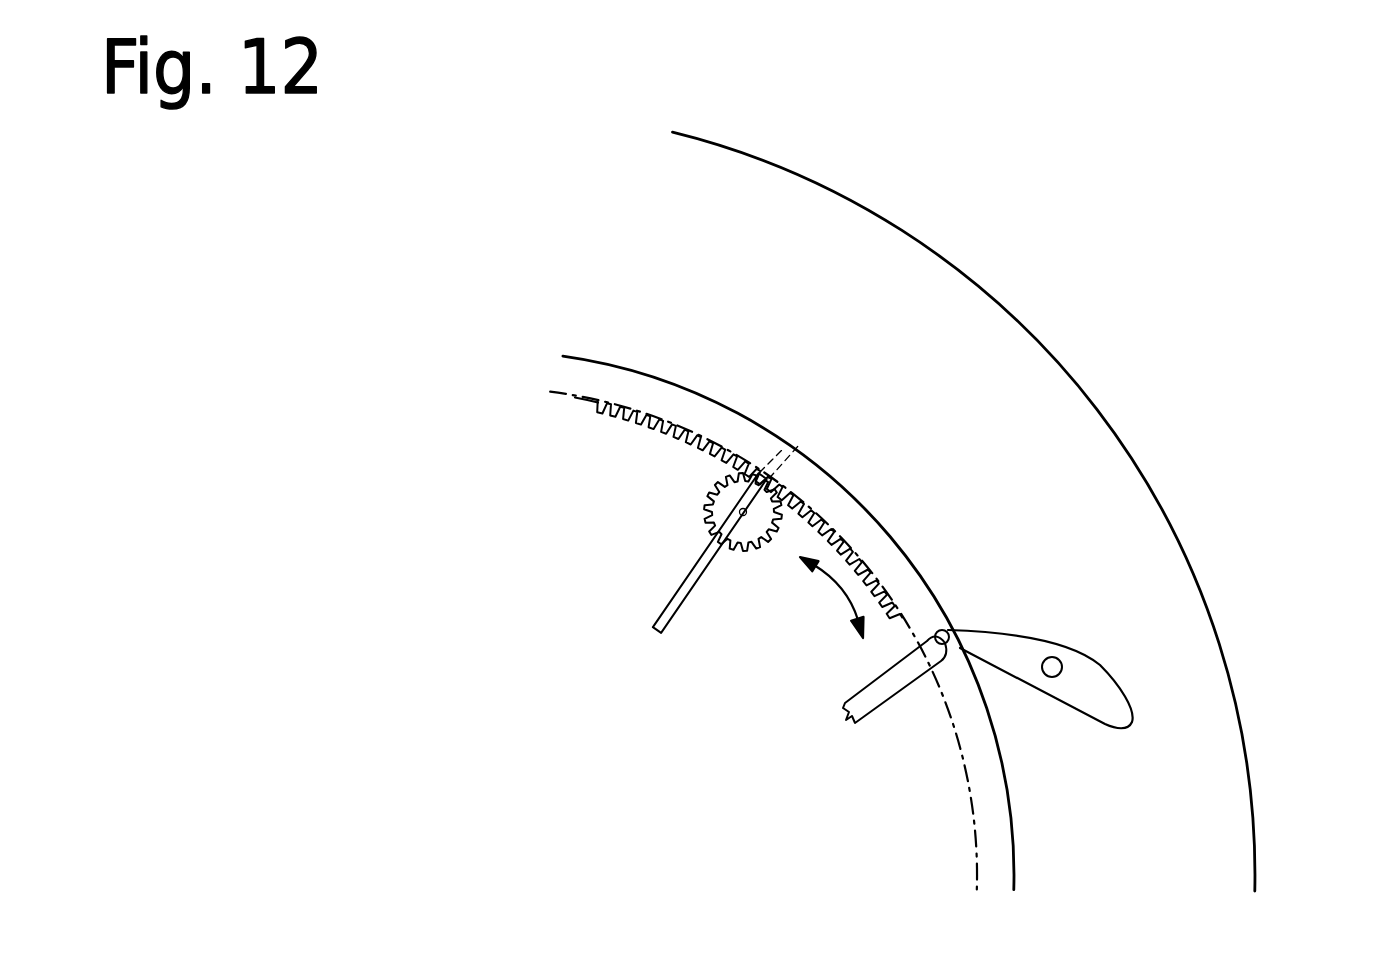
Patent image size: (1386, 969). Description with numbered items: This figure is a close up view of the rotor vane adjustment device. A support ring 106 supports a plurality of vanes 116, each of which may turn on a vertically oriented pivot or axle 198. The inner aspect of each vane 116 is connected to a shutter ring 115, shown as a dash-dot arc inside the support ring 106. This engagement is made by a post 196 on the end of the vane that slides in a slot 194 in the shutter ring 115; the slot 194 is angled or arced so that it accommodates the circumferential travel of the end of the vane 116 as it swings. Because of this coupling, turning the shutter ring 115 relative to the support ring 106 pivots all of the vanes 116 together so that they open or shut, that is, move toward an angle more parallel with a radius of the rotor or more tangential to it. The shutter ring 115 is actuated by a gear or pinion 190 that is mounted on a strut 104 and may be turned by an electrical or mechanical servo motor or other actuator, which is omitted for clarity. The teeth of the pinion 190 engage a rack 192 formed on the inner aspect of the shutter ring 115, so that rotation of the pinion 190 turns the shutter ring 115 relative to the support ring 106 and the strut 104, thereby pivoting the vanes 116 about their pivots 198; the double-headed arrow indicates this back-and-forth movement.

The strut 104 is at (671, 586).
The support ring 106 is at (1198, 780).
The shutter ring 115 is at (987, 806).
The vane 116 is at (1110, 695).
The pinion 190 is at (728, 505).
The rack 192 is at (675, 433).
The slot 194 is at (913, 652).
The post 196 is at (890, 668).
The pivot 198 is at (1057, 657).